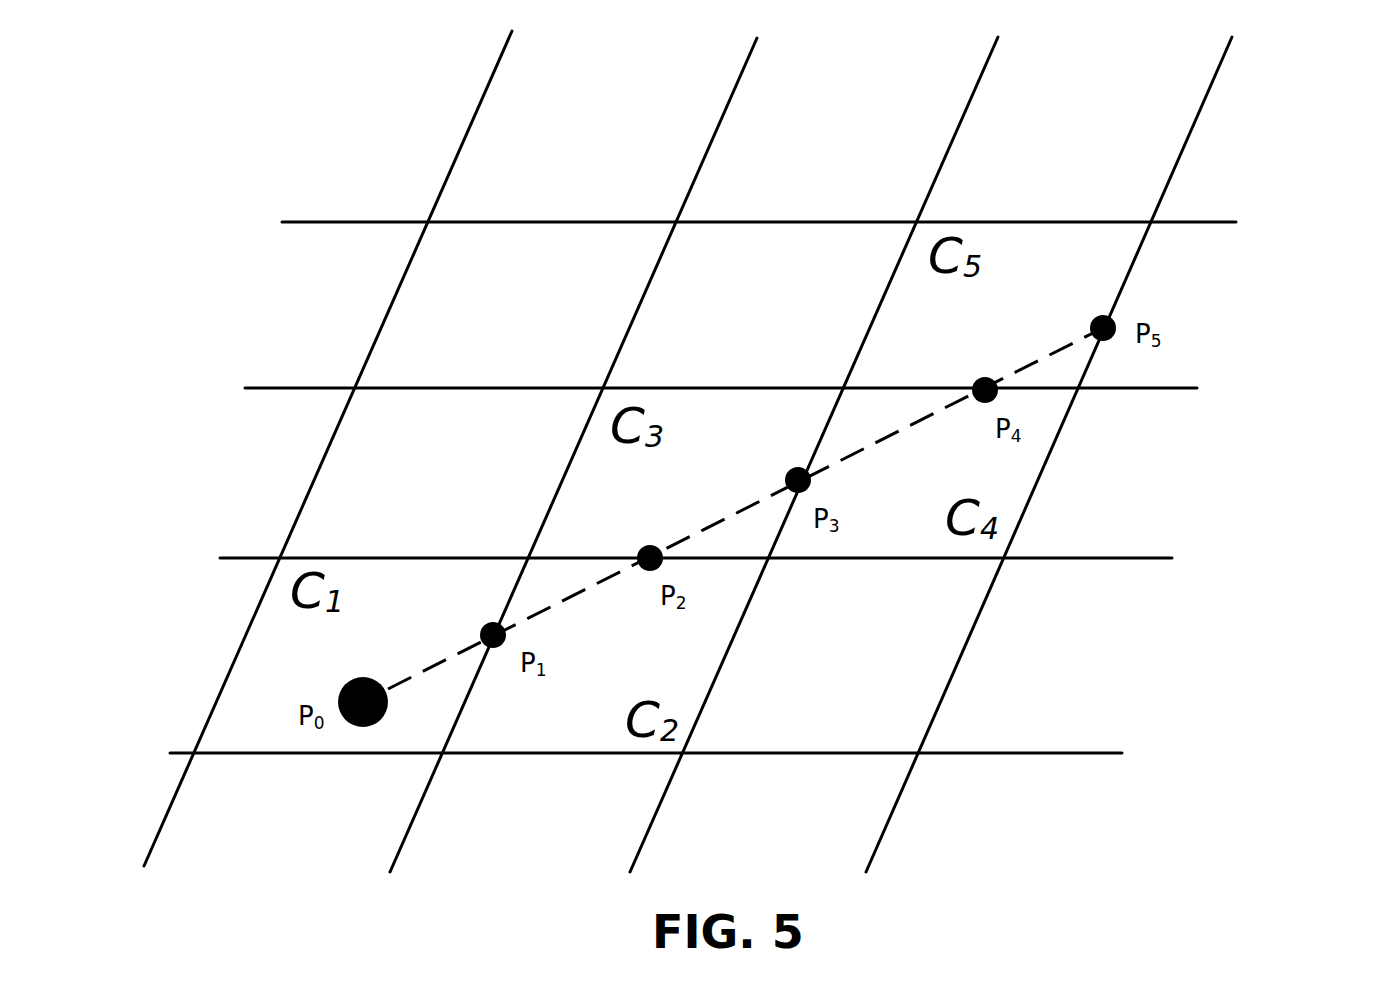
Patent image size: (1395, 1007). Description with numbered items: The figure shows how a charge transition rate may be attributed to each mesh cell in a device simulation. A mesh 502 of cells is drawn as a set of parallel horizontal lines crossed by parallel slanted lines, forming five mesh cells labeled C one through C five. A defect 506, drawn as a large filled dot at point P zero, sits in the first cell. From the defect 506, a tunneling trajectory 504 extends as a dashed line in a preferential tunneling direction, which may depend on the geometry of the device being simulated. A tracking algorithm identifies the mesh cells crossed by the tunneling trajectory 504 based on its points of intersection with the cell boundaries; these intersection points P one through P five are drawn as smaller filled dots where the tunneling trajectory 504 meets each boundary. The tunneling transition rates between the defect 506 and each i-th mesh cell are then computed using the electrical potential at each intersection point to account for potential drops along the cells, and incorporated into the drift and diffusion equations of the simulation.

The grid of cells 502 is at (1312, 116).
The tunneling trajectory 504 is at (753, 502).
The defect 506 is at (368, 678).